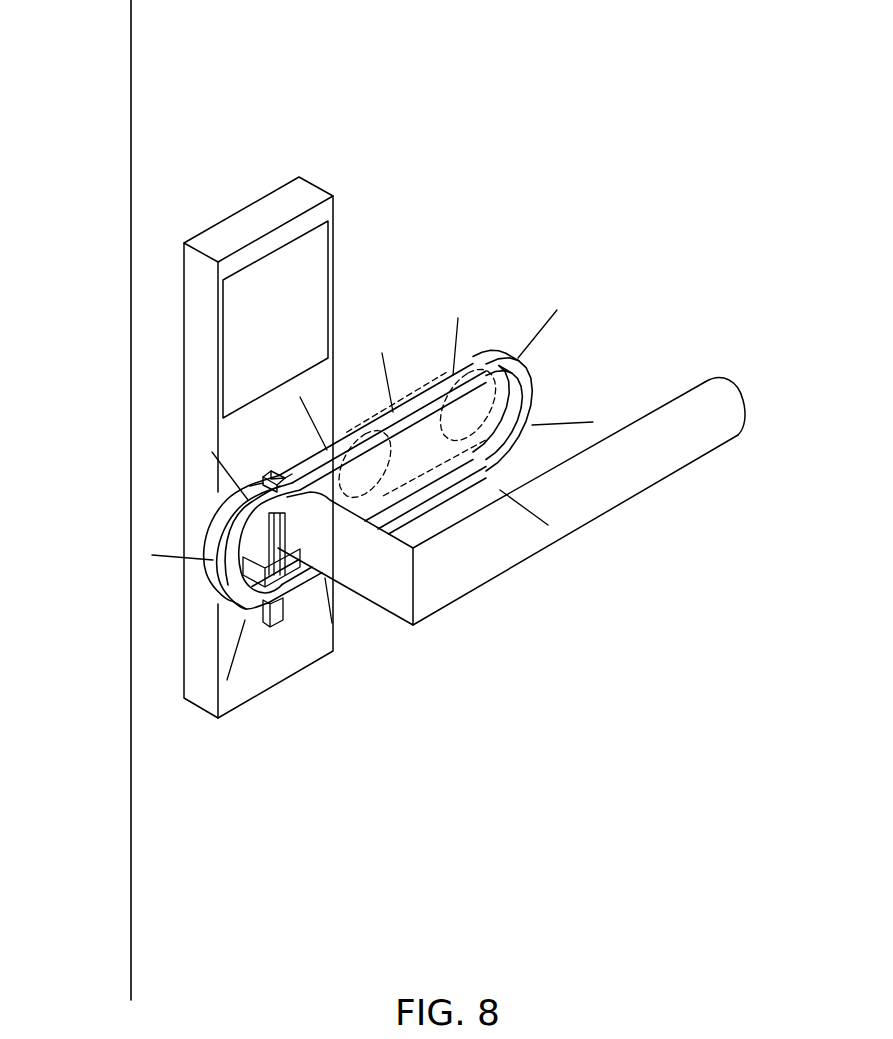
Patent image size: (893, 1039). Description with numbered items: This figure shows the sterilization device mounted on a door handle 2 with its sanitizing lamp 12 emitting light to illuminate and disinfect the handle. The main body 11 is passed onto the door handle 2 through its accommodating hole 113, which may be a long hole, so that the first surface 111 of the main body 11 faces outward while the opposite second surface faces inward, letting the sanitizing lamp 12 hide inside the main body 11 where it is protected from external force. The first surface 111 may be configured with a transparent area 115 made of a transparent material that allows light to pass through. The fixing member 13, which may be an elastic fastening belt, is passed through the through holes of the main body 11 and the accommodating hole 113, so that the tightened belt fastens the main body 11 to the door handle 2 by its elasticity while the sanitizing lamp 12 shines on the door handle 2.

The door handle 2 is at (673, 460).
The main body 11 is at (486, 360).
The sanitizing lamp 12 is at (500, 403).
The fixing member 13 is at (270, 476).
The first surface 111 is at (438, 482).
The accommodating hole 113 is at (250, 555).
The transparent area 115 is at (512, 442).